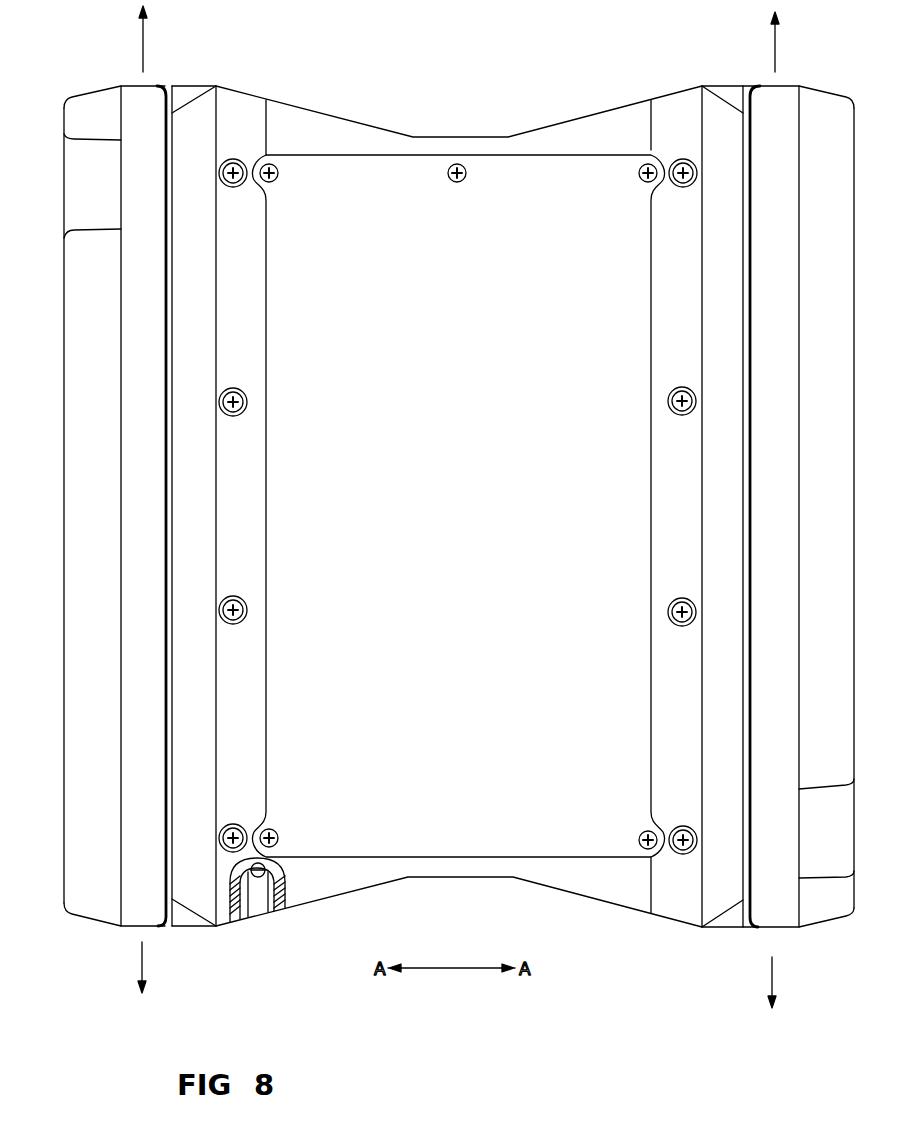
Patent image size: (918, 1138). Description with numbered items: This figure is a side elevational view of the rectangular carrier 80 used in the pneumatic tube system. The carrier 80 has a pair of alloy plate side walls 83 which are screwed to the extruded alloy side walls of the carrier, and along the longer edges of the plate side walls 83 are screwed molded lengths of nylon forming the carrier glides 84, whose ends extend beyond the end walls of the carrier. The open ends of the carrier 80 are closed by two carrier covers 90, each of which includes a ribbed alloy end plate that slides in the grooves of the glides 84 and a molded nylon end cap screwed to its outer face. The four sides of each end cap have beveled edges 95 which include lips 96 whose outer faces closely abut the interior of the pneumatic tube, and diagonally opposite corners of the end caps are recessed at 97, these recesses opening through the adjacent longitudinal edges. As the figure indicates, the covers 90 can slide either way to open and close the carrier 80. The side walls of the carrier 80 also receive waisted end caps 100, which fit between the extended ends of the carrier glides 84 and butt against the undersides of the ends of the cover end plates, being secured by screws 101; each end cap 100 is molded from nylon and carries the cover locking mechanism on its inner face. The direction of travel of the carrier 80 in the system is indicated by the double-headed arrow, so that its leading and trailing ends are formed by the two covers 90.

The carrier 80 is at (477, 92).
The alloy plate side walls 83 is at (280, 443).
The carrier glides 84 is at (260, 302).
The carrier covers 90 is at (100, 535).
The beveled edges 95 is at (95, 102).
The lips 96 is at (157, 88).
The recesses 97 is at (75, 197).
The waisted end caps 100 is at (333, 118).
The screws 101 is at (256, 877).